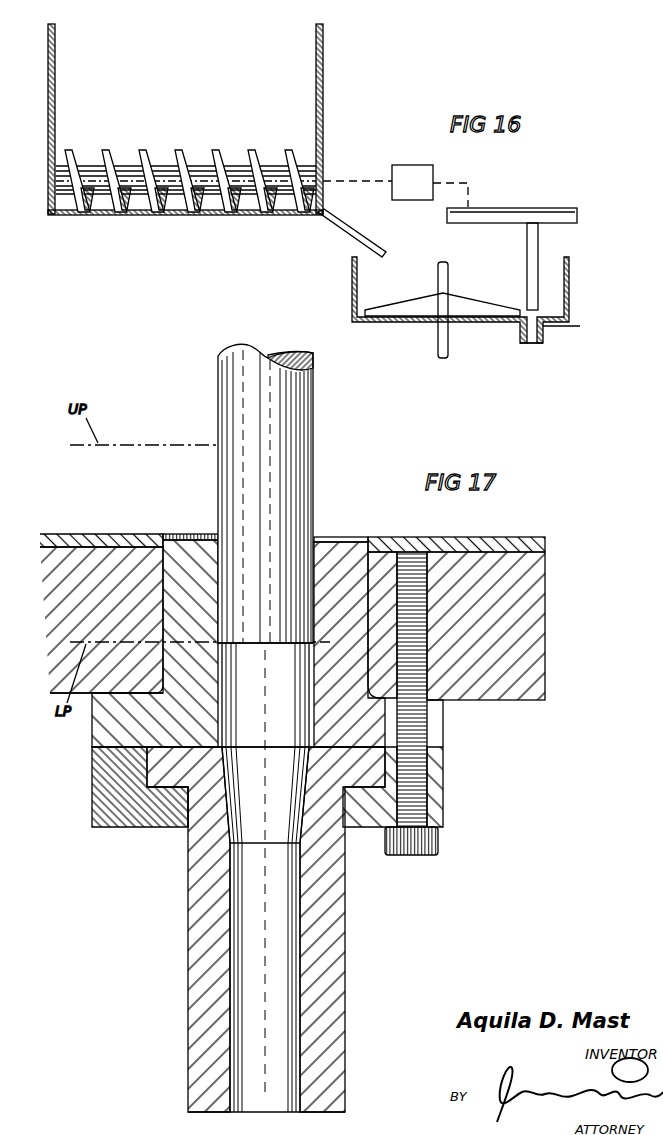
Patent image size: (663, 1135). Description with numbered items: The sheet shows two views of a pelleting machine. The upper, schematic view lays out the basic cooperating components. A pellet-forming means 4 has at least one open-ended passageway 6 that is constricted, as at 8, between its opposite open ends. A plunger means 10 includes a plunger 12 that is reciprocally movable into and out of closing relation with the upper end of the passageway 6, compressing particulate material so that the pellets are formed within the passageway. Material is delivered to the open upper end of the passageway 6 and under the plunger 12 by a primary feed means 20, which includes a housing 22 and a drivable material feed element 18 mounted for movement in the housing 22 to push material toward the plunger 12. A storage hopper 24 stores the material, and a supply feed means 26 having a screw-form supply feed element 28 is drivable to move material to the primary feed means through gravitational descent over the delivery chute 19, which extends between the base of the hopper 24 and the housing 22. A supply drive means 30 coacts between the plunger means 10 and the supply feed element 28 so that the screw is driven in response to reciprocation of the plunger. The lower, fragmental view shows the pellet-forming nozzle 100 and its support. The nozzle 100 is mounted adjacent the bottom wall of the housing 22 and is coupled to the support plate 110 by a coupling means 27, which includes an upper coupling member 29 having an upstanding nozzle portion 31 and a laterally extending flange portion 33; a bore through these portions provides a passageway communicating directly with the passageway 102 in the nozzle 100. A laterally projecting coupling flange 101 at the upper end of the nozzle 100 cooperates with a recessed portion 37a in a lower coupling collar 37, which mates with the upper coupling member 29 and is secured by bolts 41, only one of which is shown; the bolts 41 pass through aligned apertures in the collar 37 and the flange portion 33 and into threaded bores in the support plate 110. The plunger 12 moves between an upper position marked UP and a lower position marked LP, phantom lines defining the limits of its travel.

In FIG. 16, the storage hopper 24 is at (56, 82).
In FIG. 16, the supply feed means 26 is at (158, 213).
In FIG. 16, the supply feed element 28 is at (105, 149).
In FIG. 16, the delivery chute 19 is at (336, 234).
In FIG. 16, the supply drive means 30 is at (395, 186).
In FIG. 16, the plunger means 10 is at (582, 226).
In FIG. 16, the plunger 12 is at (540, 283).
In FIG. 17, the plunger 12 is at (315, 487).
In FIG. 16, the material feed element 18 is at (472, 300).
In FIG. 16, the primary feed means 20 is at (407, 328).
In FIG. 16, the housing 22 is at (352, 305).
In FIG. 17, the housing 22 is at (457, 537).
In FIG. 16, the constriction 8 is at (575, 322).
In FIG. 16, the passageway 6 is at (544, 341).
In FIG. 16, the pellet-forming means 4 is at (513, 337).
In FIG. 17, the upper coupling member 29 is at (356, 537).
In FIG. 17, the coupling means 27 is at (78, 747).
In FIG. 17, the support plate 110 is at (55, 680).
In FIG. 17, the upstanding nozzle portion 31 is at (181, 558).
In FIG. 17, the lower coupling collar 37 is at (97, 826).
In FIG. 17, the recessed portion 37a is at (170, 786).
In FIG. 17, the nozzle 100 is at (353, 1009).
In FIG. 17, the coupling flange 101 is at (378, 775).
In FIG. 17, the flange portion 33 is at (444, 732).
In FIG. 17, the bolts 41 is at (438, 840).
In FIG. 17, the passageway 102 is at (300, 935).